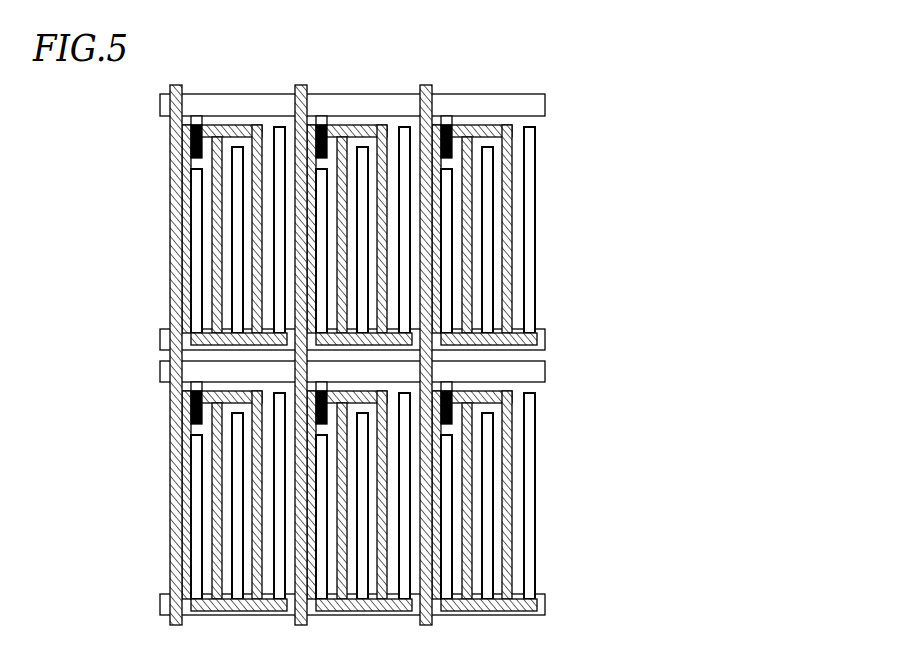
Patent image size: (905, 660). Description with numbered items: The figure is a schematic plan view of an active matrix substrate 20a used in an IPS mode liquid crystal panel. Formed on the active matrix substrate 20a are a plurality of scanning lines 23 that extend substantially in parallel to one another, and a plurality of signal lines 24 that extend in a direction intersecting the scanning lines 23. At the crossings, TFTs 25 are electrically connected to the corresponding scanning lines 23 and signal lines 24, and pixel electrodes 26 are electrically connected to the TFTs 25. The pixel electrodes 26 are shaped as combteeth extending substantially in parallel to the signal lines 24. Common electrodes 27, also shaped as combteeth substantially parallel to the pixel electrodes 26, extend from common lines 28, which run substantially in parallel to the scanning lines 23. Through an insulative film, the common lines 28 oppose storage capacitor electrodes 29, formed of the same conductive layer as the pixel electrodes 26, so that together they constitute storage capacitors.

The active matrix substrate 20a is at (357, 315).
The scanning line 23 is at (150, 112).
The signal line 24 is at (159, 293).
The TFT 25 is at (460, 129).
The pixel electrode 26 is at (518, 166).
The common electrode 27 is at (546, 218).
The common line 28 is at (556, 337).
The storage capacitor electrode 29 is at (508, 333).